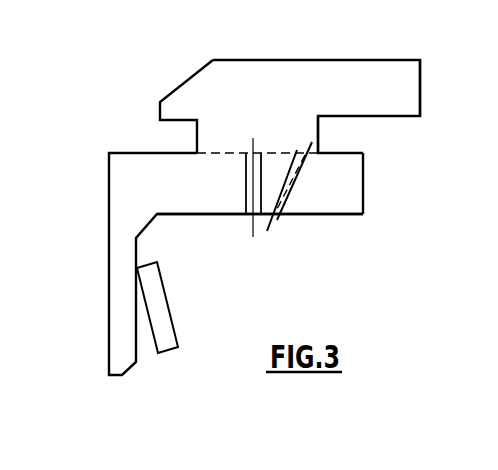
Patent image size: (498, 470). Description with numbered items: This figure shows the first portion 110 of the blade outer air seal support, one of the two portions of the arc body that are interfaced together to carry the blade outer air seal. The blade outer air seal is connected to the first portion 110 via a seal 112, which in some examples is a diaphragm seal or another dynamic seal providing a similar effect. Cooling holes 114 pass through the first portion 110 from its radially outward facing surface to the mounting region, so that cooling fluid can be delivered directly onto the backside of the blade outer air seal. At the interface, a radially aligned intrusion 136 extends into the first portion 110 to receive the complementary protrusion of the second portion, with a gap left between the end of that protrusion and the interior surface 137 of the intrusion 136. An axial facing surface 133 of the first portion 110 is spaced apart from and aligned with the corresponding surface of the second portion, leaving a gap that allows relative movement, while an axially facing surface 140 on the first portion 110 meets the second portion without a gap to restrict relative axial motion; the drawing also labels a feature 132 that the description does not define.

The first portion 110 is at (122, 56).
The seal 112 is at (150, 308).
The cooling holes 114 is at (287, 167).
The corner portion 132 is at (319, 143).
The axial facing surface 133 is at (363, 200).
The radially aligned intrusion 136 is at (342, 125).
The interior surface 137 is at (337, 157).
The axially facing surface 140 is at (420, 82).